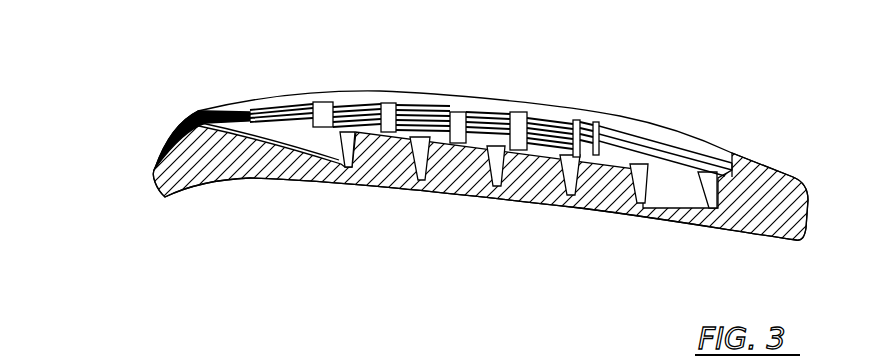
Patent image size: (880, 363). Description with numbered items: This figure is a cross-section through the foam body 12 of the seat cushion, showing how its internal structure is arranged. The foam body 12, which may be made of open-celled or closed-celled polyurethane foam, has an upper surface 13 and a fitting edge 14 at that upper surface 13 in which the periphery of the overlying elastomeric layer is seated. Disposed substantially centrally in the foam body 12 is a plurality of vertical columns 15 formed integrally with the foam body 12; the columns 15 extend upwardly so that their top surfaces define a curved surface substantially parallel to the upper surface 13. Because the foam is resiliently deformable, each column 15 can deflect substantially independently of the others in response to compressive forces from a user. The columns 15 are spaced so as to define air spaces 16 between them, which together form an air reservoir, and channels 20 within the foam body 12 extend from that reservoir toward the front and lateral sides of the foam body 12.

The foam body 12 is at (435, 146).
The upper surface 13 is at (727, 160).
The fitting edge 14 is at (670, 145).
The vertical columns 15 is at (557, 137).
The air spaces 16 is at (593, 137).
The channels 20 is at (260, 137).